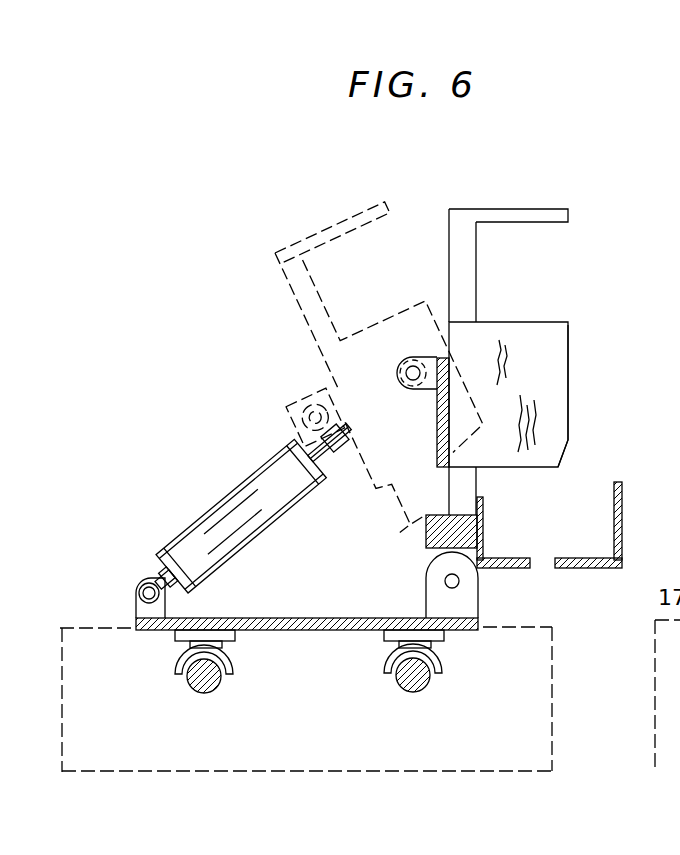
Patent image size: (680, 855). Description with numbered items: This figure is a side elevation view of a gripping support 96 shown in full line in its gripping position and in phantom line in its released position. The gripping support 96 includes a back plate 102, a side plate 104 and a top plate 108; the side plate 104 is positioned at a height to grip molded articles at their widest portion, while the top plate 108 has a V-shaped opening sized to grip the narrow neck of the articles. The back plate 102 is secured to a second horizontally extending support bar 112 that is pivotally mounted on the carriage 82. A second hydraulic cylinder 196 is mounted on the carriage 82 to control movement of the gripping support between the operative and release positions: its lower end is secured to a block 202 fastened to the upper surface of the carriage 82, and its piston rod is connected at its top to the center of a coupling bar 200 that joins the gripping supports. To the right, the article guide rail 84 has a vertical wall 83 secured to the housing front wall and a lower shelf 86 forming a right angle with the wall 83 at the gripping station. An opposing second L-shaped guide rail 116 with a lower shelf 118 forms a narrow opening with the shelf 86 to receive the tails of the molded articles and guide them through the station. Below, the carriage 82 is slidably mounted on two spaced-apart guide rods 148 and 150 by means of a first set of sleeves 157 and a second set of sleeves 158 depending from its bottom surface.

The carriage 82 is at (300, 618).
The vertical wall 83 is at (484, 528).
The article guide rail 84 is at (484, 507).
The lower shelf 86 is at (515, 560).
The gripping support 96 is at (547, 337).
The back plate 102 is at (467, 267).
The side plate 104 is at (553, 385).
The top plate 108 is at (512, 211).
The second horizontally extending support bar 112 is at (483, 566).
The second L-shaped guide rail 116 is at (622, 517).
The lower shelf 118 is at (580, 558).
The guide rod 148 is at (218, 684).
The guide rod 150 is at (428, 686).
The sleeves 157 is at (235, 634).
The sleeves 158 is at (437, 635).
The second hydraulic cylinder 196 is at (268, 522).
The coupling bar 200 is at (447, 405).
The block 202 is at (137, 610).